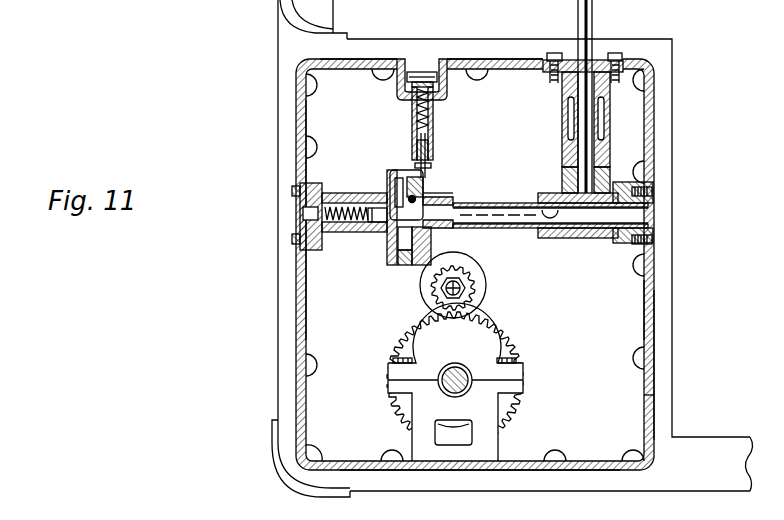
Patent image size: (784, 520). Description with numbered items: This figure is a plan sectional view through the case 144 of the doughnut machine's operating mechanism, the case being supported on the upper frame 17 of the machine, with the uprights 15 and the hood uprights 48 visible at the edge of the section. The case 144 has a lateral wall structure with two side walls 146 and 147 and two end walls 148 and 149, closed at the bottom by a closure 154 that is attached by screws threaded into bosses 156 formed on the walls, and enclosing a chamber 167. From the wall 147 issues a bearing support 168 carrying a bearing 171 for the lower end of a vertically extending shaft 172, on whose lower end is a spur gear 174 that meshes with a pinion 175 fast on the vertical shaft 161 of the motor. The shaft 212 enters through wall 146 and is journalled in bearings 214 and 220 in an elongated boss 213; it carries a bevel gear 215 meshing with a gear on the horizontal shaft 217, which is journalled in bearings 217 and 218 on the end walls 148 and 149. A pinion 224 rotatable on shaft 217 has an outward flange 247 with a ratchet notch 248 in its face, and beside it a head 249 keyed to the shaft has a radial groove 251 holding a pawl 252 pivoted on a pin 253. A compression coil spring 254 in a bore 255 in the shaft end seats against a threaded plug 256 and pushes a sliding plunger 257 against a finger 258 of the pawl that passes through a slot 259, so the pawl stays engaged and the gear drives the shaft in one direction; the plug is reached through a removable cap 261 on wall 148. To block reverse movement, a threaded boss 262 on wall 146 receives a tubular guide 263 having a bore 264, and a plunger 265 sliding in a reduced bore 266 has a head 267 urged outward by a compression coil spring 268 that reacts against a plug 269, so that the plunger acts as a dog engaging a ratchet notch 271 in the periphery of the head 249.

The uprights 15 is at (305, 452).
The upper and lower frames 17 is at (278, 67).
The uprights 48 is at (290, 19).
The case 144 is at (654, 373).
The side wall 146 is at (518, 62).
The side wall 147 is at (425, 468).
The end wall 148 is at (302, 310).
The end wall 149 is at (650, 320).
The closure 154 is at (310, 343).
The bosses 156 is at (312, 147).
The vertical shaft 161 is at (458, 290).
The chamber 167 is at (617, 407).
The bearing support 168 is at (427, 438).
The bearing 171 is at (473, 378).
The vertically extending shaft 172 is at (473, 392).
The spur gear 174 is at (522, 345).
The pinion 175 is at (477, 285).
The shaft 212 is at (583, 107).
The elongated boss 213 is at (611, 110).
The bearing 214 is at (568, 153).
The bevel gear 215 is at (607, 176).
The shaft 217 is at (330, 243).
The bearing 218 is at (624, 244).
The bearing 220 is at (605, 58).
The pinion 224 is at (377, 222).
The flange 247 is at (393, 230).
The ratchet notch 248 is at (392, 181).
The head 249 is at (433, 239).
The groove 251 is at (427, 181).
The pawl 252 is at (397, 171).
The pin 253 is at (427, 198).
The compression coil spring 254 is at (372, 225).
The bore 255 is at (421, 265).
The plug 256 is at (303, 217).
The sliding plunger 257 is at (385, 221).
The finger 258 is at (407, 240).
The slot 259 is at (490, 232).
The removable cap 261 is at (296, 208).
The threaded boss 262 is at (368, 63).
The tubular guide 263 is at (438, 103).
The bore 264 is at (433, 117).
The plunger 265 is at (433, 150).
The bore 266 is at (417, 147).
The head 267 is at (435, 135).
The compression coil spring 268 is at (460, 68).
The plug 269 is at (423, 72).
The ratchet notch 271 is at (431, 167).